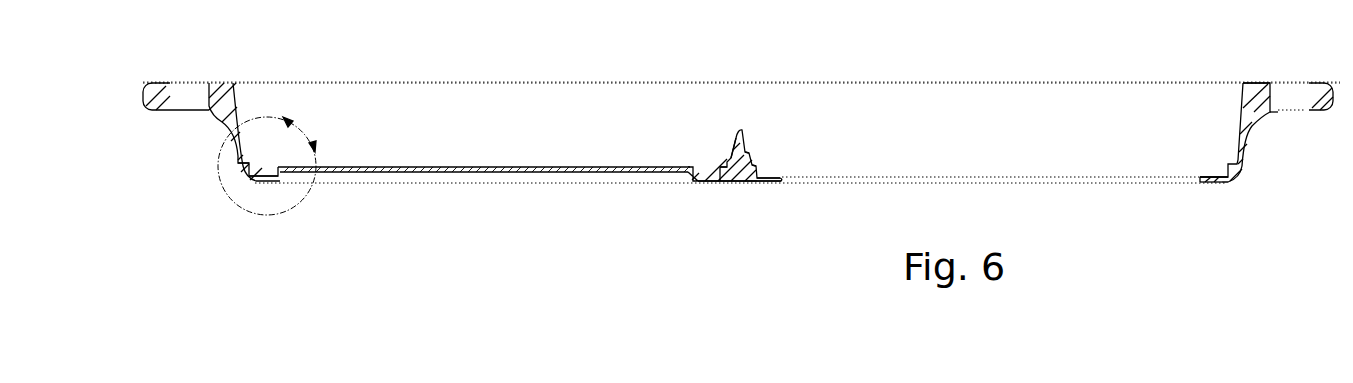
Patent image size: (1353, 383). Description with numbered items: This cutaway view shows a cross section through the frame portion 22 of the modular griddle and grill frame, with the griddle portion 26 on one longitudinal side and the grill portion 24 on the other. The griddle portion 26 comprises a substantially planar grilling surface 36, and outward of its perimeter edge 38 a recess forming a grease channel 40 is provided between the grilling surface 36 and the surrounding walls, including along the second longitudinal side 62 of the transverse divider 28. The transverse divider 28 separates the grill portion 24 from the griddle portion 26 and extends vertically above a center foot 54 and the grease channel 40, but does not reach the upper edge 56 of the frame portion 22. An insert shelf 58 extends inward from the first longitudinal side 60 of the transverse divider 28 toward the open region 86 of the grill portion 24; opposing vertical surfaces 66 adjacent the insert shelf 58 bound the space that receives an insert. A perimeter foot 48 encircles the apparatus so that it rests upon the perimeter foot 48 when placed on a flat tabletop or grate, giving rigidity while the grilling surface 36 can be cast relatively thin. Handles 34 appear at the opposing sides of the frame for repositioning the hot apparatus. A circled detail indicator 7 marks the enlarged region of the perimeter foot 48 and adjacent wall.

The detail view 7 indicator 7 is at (267, 165).
The frame portion 22 is at (1243, 82).
The grill portion 24 is at (1040, 73).
The griddle portion 26 is at (482, 66).
The transverse divider 28 is at (741, 130).
The handles 34 is at (182, 118).
The grilling surface 36 is at (400, 163).
The perimeter edge 38 is at (278, 165).
The grease channel 40 is at (712, 167).
The perimeter foot 48 is at (268, 188).
The center foot 54 is at (726, 184).
The upper edge 56 is at (1258, 82).
The insert shelf 58 is at (779, 177).
The first longitudinal side 60 is at (748, 153).
The second longitudinal side 62 is at (727, 148).
The vertical surfaces 66 is at (771, 183).
The open region 86 is at (1038, 188).